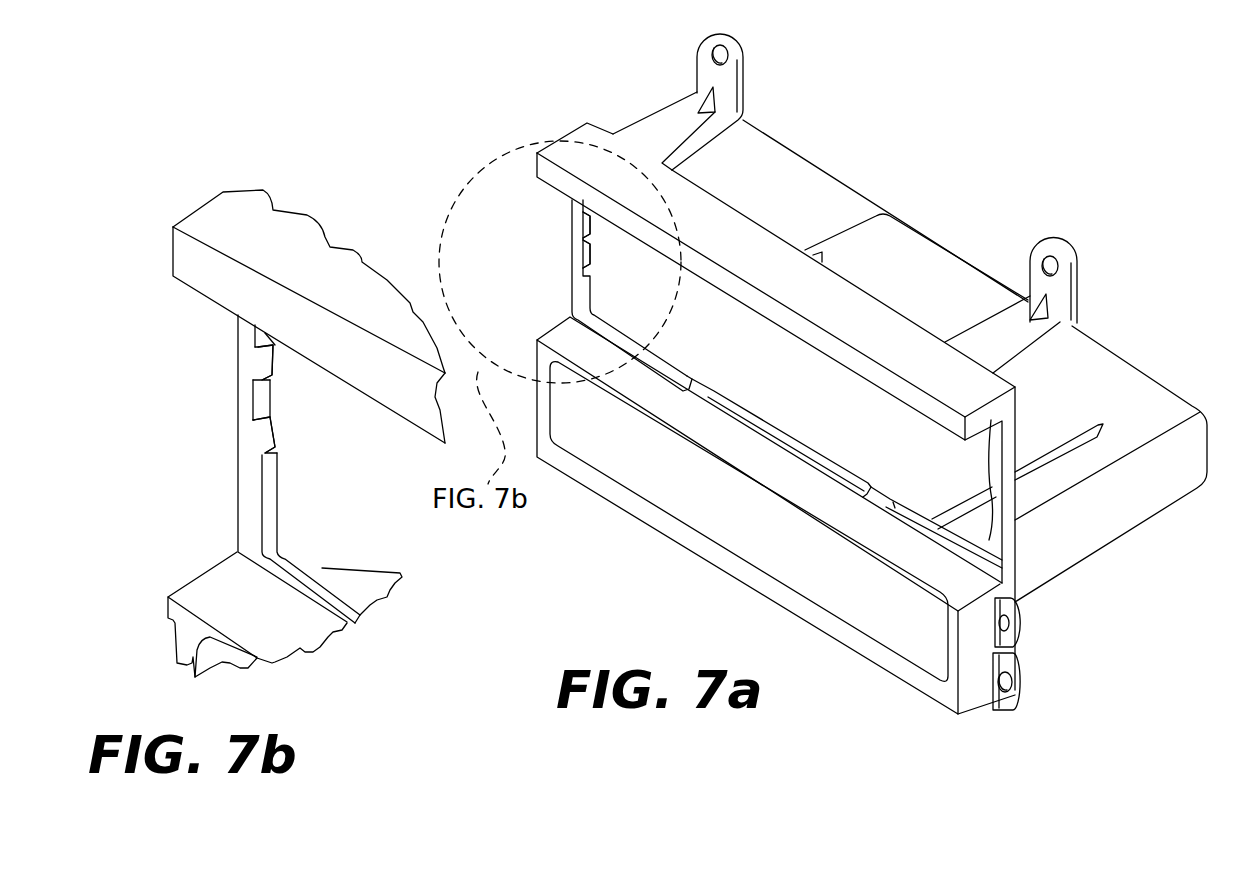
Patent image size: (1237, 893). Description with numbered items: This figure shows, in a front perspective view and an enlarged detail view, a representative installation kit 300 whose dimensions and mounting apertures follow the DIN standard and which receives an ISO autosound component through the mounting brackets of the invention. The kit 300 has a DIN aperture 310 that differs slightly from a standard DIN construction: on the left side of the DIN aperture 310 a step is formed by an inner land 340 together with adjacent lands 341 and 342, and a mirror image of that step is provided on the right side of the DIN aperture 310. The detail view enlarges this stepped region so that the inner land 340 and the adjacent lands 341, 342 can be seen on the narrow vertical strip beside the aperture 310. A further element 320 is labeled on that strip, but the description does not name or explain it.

In FIG. 7A, the installation kit 300 is at (752, 247).
In FIG. 7B, the DIN aperture 310 is at (292, 548).
In FIG. 7A, the spring strip 320 is at (573, 295).
In FIG. 7B, the spring strip 320 is at (252, 502).
In FIG. 7A, the inner land 340 is at (577, 242).
In FIG. 7B, the inner land 340 is at (265, 401).
In FIG. 7A, the adjacent land 341 is at (587, 211).
In FIG. 7B, the adjacent land 341 is at (258, 367).
In FIG. 7A, the adjacent land 342 is at (577, 265).
In FIG. 7B, the adjacent land 342 is at (266, 437).